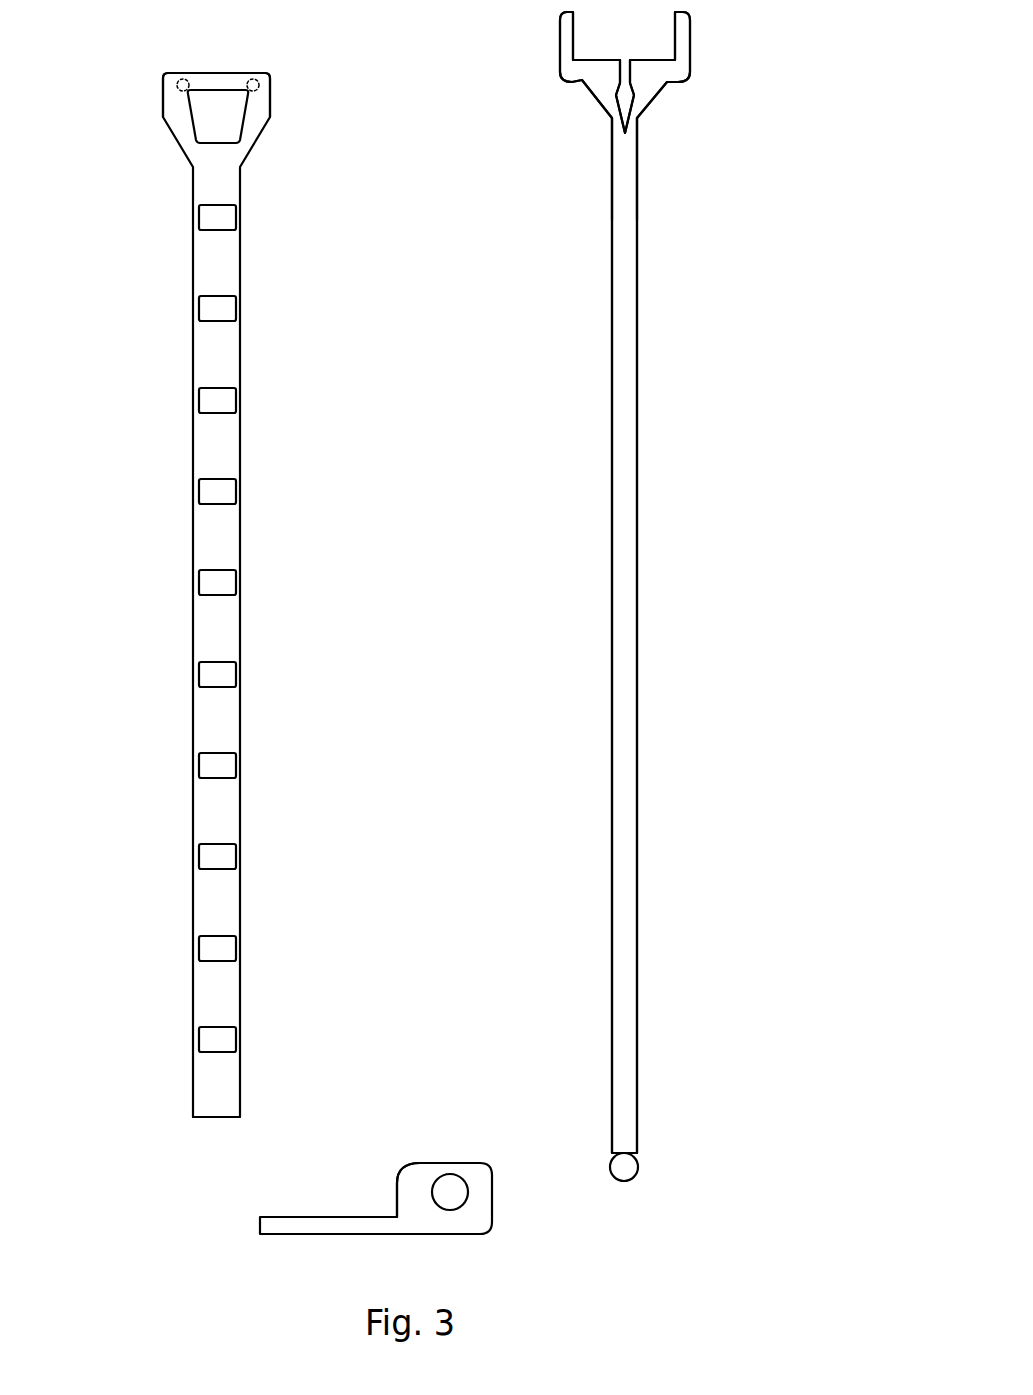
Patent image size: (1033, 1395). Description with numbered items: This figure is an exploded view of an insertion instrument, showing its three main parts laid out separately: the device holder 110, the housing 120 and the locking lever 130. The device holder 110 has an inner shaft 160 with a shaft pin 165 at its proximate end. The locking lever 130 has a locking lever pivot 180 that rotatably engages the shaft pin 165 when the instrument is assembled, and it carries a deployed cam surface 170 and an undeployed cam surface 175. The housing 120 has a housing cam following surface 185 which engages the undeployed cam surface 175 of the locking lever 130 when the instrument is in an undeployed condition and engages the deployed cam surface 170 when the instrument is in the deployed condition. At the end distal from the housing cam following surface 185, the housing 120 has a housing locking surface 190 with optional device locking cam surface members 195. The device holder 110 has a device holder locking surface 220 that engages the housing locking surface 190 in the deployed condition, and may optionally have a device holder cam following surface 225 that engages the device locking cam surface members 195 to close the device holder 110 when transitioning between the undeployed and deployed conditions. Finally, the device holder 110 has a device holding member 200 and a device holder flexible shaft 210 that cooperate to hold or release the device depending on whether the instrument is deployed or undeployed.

The device holder 110 is at (860, 80).
The housing 120 is at (193, 618).
The locking lever 130 is at (460, 1234).
The inner shaft 160 is at (635, 540).
The shaft pin 165 is at (638, 1162).
The deployed cam surface 170 is at (388, 1189).
The undeployed cam surface 175 is at (454, 1152).
The locking lever pivot 180 is at (470, 1170).
The housing cam following surface 185 is at (210, 1117).
The housing locking surface 190 is at (213, 73).
The device locking cam surface members 195 is at (177, 85).
The device holding member 200 is at (560, 30).
The device holder flexible shaft 210 is at (610, 113).
The device holder locking surface 220 is at (585, 85).
The device holder cam following surface 225 is at (605, 100).